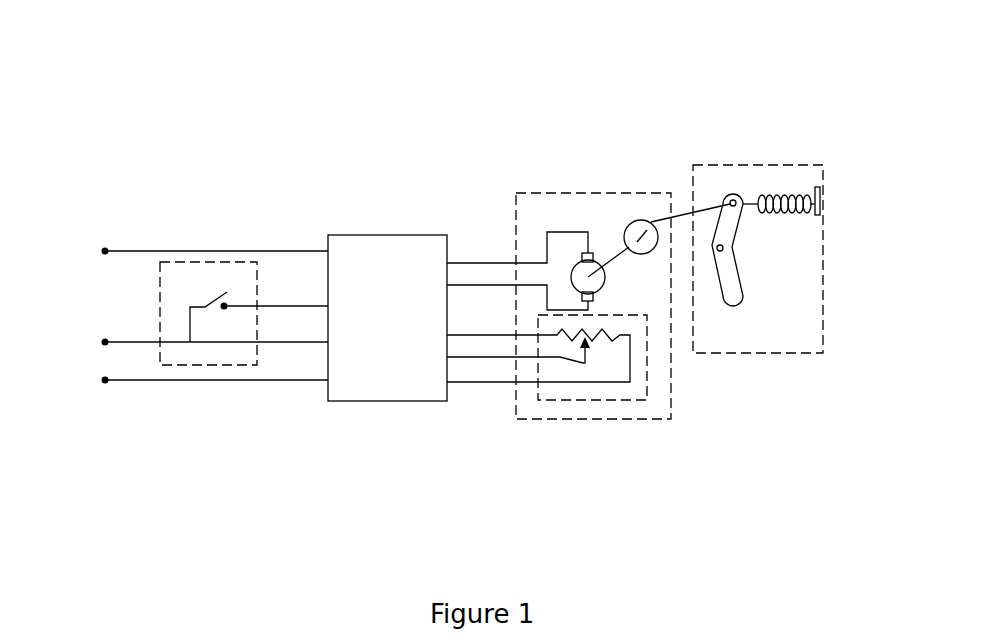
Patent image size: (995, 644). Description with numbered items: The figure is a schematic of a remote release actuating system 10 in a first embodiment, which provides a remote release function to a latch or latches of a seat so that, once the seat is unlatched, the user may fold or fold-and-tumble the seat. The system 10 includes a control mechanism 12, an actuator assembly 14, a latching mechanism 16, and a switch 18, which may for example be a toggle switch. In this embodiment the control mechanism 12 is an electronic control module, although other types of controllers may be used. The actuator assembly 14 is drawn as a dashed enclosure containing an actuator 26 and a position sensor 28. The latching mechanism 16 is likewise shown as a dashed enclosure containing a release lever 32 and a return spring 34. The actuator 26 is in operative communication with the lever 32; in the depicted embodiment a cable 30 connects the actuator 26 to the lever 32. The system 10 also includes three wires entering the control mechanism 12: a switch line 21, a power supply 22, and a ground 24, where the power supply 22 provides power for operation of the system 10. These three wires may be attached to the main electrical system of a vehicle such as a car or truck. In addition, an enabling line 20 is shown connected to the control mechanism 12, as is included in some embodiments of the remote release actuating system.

The remote release actuating system 10 is at (562, 79).
The control mechanism 12 is at (387, 284).
The actuator assembly 14 is at (568, 309).
The latching mechanism 16 is at (778, 208).
The switch 18 is at (208, 265).
The enabling line 20 is at (185, 192).
The switch line 21 is at (276, 251).
The power supply 22 is at (186, 310).
The ground 24 is at (189, 368).
The actuator 26 is at (583, 217).
The position sensor 28 is at (593, 402).
The cable 30 is at (690, 159).
The release lever 32 is at (787, 250).
The return spring 34 is at (787, 155).